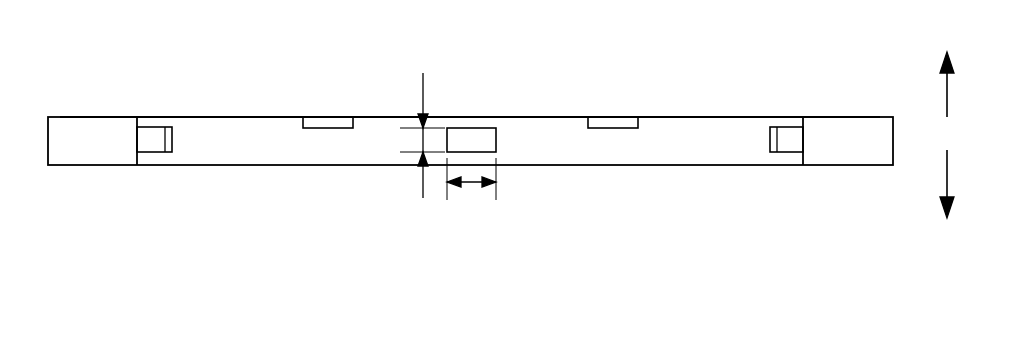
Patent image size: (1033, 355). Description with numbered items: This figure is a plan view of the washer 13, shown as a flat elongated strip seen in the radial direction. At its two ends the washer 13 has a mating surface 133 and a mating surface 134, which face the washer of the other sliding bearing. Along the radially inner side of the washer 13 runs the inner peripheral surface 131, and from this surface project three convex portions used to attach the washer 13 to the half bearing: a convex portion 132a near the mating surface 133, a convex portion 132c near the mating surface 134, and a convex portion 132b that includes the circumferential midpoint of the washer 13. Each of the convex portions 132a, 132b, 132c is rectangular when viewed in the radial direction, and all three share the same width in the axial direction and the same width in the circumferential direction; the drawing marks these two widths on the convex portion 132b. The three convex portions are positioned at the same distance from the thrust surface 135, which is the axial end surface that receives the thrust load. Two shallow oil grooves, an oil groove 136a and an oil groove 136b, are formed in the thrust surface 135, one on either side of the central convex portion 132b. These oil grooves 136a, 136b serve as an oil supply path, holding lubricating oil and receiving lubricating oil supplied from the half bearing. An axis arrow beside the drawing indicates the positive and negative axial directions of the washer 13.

The washer 13 is at (708, 54).
The inner peripheral surface 131 is at (710, 155).
The convex portion 132a is at (158, 132).
The convex portion 132b is at (470, 130).
The convex portion 132c is at (783, 130).
The mating surface 133 is at (95, 127).
The mating surface 134 is at (848, 127).
The thrust surface 135 is at (226, 115).
The oil groove 136a is at (330, 123).
The oil groove 136b is at (610, 127).